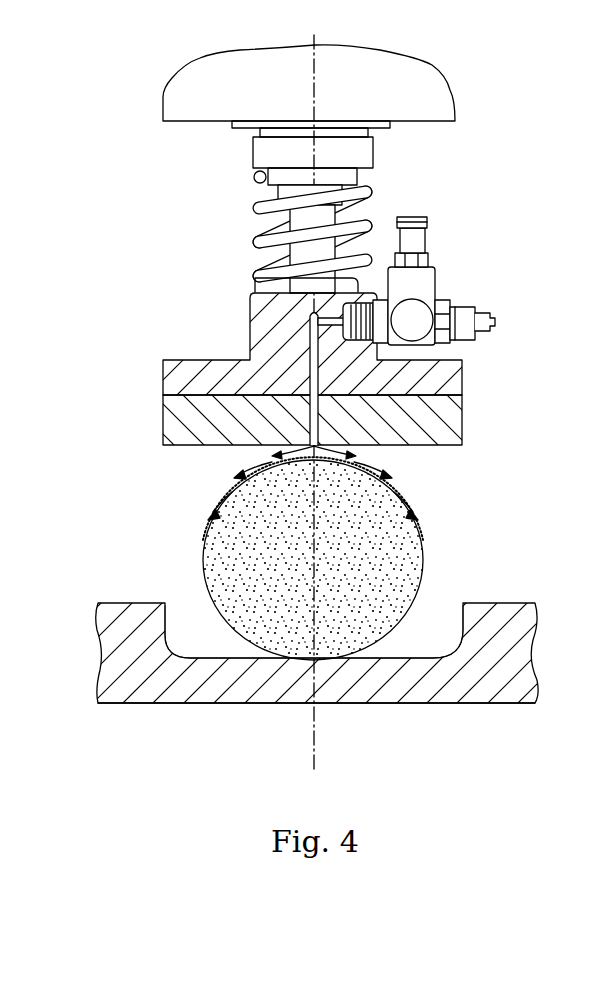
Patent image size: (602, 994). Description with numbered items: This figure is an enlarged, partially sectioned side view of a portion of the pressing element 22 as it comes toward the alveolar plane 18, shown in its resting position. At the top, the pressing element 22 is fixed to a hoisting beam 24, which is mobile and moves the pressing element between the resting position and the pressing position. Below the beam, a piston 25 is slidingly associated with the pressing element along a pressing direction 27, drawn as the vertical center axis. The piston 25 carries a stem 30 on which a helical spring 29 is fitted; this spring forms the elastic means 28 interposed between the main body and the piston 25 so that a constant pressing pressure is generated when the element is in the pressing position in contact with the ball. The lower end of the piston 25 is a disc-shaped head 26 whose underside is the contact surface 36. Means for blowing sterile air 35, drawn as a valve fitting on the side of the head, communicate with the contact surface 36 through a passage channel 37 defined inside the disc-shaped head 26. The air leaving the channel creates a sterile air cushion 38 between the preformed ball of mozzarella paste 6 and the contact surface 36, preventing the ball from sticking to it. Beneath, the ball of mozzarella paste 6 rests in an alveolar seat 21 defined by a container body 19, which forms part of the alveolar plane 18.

The pressing element 22 is at (99, 147).
The hoisting beam 24 is at (408, 92).
The elastic means 28 is at (308, 231).
The stem 30 is at (258, 227).
The helical spring 29 is at (253, 243).
The piston 25 is at (280, 262).
The means for blowing sterile air 35 is at (460, 296).
The passage channel 37 is at (305, 365).
The disc-shaped head 26 is at (208, 385).
The contact surface 36 is at (415, 444).
The sterile air cushion 38 is at (426, 542).
The preformed ball of mozzarella paste 6 is at (432, 568).
The alveolar seat 21 is at (176, 640).
The container body 19 is at (500, 634).
The alveolar plane 18 is at (498, 712).
The pressing direction 27 is at (317, 733).